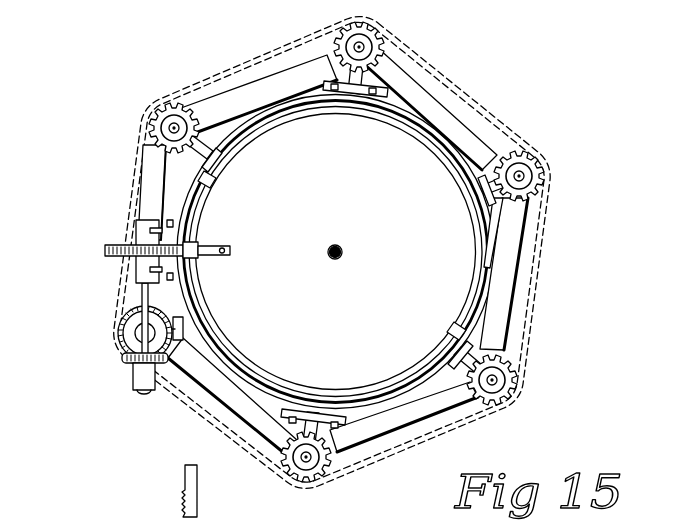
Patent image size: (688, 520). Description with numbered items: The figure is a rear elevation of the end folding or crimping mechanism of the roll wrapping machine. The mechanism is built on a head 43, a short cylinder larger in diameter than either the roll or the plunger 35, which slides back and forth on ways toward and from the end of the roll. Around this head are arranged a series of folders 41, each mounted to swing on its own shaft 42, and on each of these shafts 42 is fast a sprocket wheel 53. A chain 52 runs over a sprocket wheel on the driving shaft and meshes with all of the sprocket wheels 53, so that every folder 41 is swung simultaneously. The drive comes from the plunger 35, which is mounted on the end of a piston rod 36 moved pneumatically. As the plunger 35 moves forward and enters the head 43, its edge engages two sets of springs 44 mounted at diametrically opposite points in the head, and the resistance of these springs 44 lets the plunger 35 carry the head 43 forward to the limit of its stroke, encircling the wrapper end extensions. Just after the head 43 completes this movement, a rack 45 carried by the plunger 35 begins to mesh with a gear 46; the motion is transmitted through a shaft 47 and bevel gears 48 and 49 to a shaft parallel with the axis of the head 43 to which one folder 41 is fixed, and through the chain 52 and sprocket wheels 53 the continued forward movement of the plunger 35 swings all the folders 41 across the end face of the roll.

The plunger 35 is at (412, 152).
The piston rod 36 is at (338, 249).
The folders 41 is at (265, 92).
The shaft 42 is at (366, 49).
The head 43 is at (490, 287).
The springs 44 is at (209, 181).
The rack 45 is at (197, 260).
The gear 46 is at (106, 256).
The shaft 47 is at (142, 293).
The bevel gear 48 is at (122, 360).
The bevel gear 49 is at (120, 333).
The chain 52 is at (545, 218).
The sprocket wheels 53 is at (363, 33).